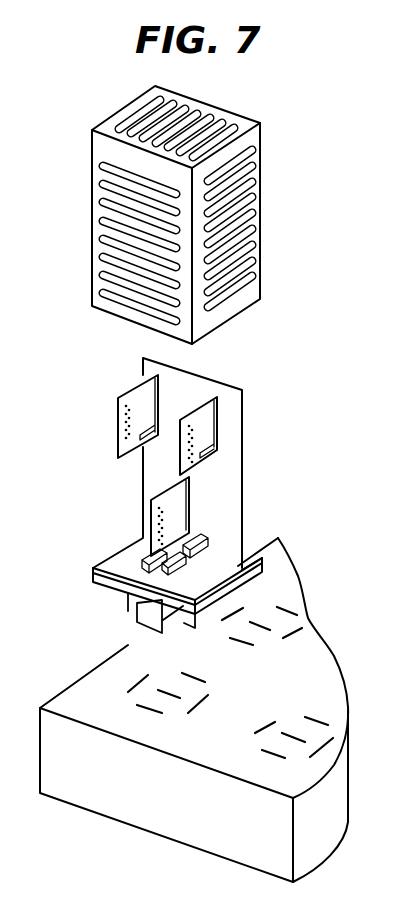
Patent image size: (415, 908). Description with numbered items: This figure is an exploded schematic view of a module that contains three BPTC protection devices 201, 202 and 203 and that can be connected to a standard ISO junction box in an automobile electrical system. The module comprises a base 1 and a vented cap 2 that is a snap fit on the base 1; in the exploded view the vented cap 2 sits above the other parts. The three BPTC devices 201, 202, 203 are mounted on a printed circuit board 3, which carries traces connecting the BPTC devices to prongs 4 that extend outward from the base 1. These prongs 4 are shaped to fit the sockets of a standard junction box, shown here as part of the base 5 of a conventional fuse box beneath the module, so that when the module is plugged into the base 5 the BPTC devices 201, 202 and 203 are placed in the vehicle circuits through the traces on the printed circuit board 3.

The base 1 is at (112, 556).
The vented cap 2 is at (259, 135).
The printed circuit board 3 is at (233, 492).
The prongs 4 is at (128, 610).
The base of a conventional fuse box 5 is at (120, 818).
The BPTC device 201 is at (152, 393).
The BPTC device 202 is at (210, 422).
The BPTC device 203 is at (180, 513).